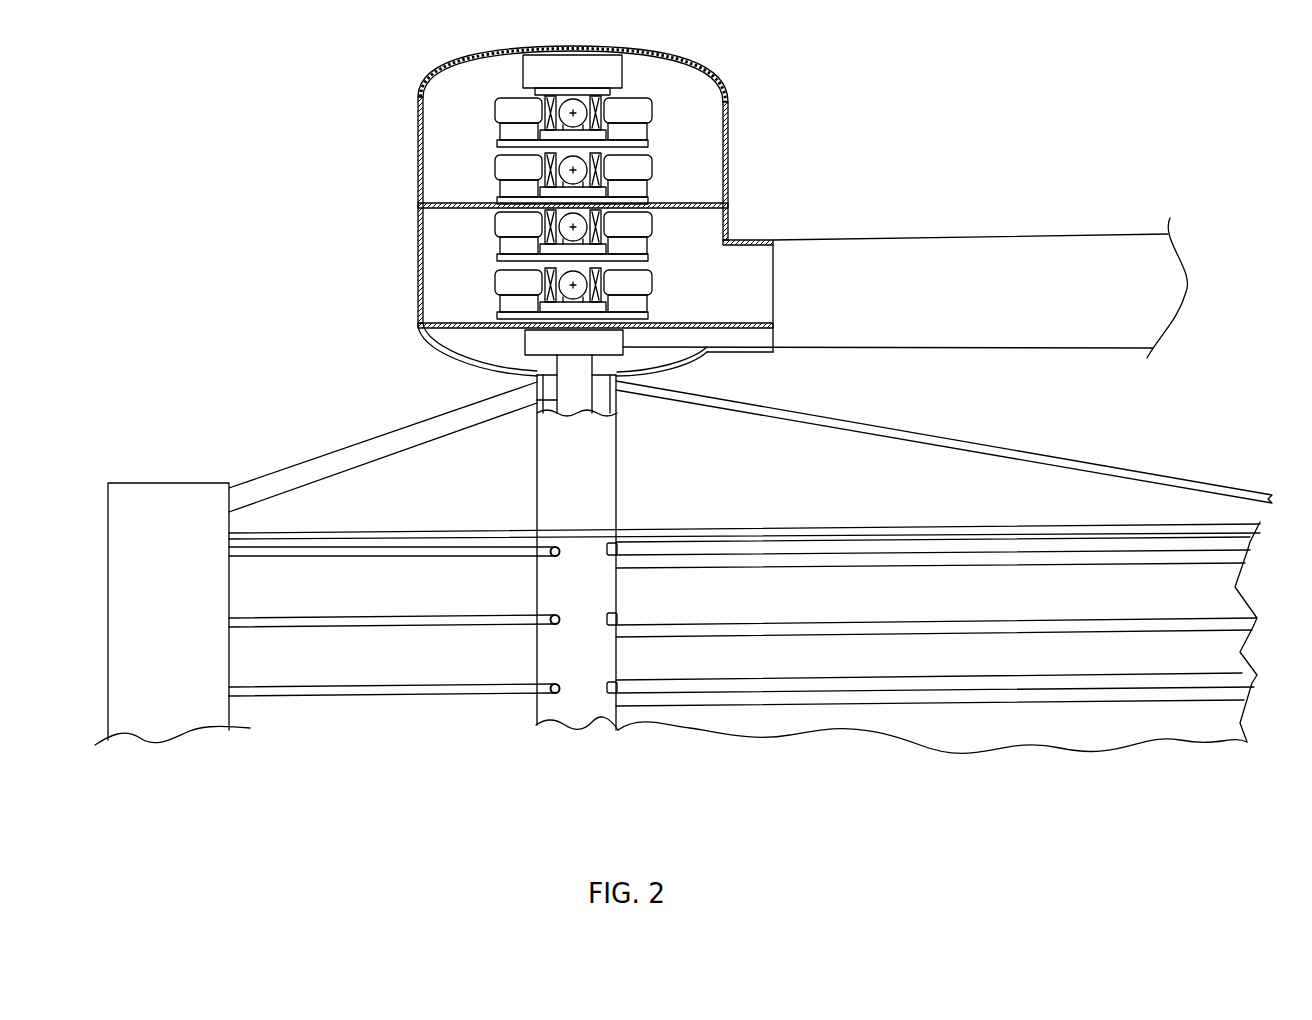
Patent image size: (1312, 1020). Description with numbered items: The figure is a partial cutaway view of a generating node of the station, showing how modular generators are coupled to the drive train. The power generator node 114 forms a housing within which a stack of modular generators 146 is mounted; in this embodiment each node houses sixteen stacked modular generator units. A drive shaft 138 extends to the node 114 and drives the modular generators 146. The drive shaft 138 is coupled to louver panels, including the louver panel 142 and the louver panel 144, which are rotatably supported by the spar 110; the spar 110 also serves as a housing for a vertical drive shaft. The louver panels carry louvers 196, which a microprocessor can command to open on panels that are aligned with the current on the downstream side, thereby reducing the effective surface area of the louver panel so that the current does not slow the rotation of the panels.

The spar 110 is at (537, 477).
The power generator node 114 is at (728, 122).
The drive shaft 138 is at (537, 397).
The louver panel 142 is at (258, 532).
The louver panel 144 is at (868, 527).
The modular generators 146 is at (578, 98).
The louvers 196 is at (262, 558).